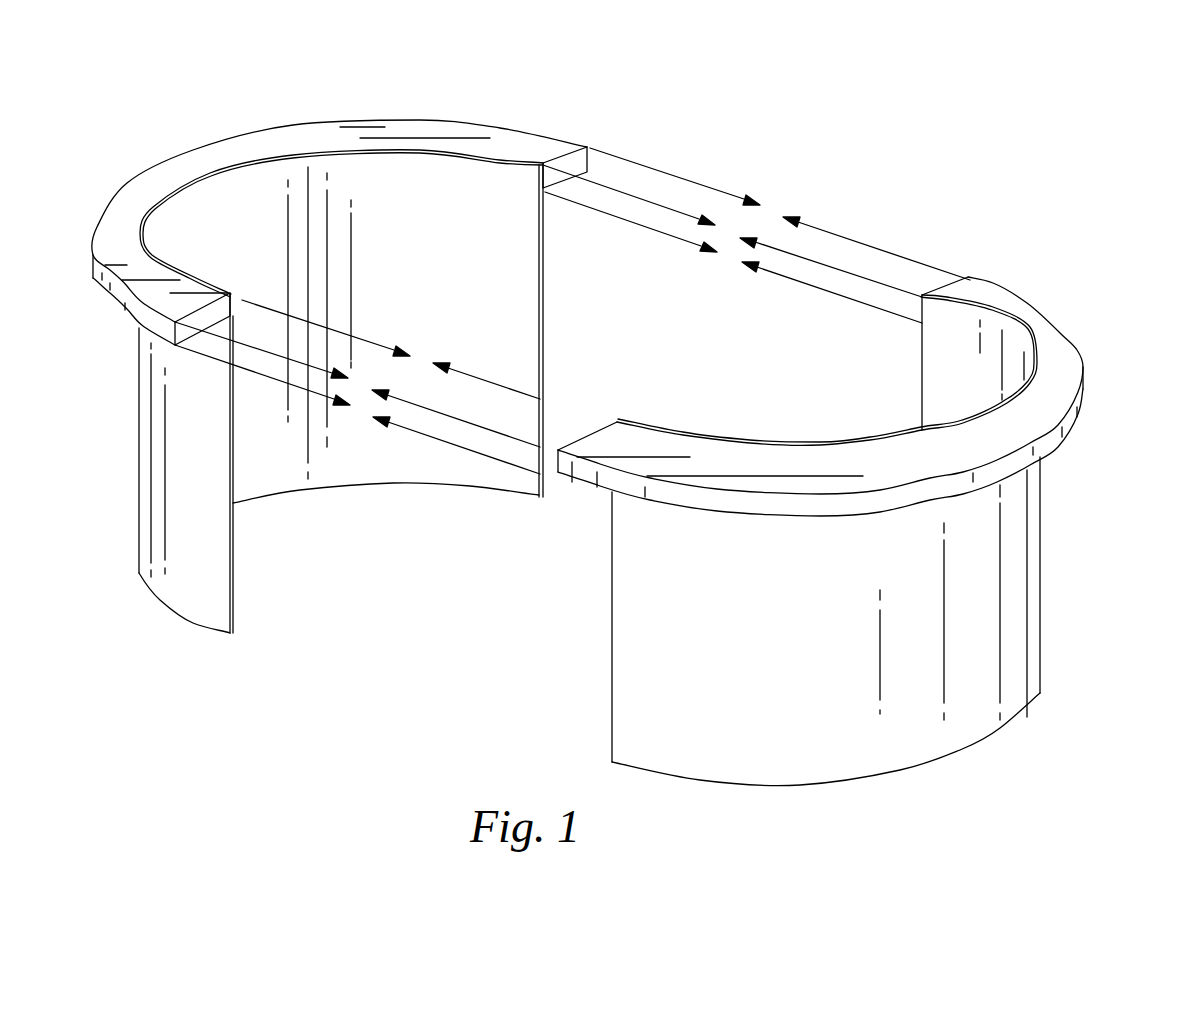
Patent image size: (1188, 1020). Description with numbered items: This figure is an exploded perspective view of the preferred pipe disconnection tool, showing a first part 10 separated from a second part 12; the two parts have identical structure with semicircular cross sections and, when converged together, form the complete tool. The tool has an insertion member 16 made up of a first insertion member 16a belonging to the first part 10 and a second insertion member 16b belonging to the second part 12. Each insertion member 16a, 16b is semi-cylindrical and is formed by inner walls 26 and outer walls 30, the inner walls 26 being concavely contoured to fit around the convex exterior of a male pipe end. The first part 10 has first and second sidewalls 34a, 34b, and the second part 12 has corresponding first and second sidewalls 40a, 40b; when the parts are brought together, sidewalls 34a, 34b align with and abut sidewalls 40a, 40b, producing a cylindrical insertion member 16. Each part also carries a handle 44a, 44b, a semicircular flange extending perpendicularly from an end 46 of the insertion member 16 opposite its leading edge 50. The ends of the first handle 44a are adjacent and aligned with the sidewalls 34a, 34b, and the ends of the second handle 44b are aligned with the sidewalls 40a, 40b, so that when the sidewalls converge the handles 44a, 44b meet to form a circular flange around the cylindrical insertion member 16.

The first part 10 is at (135, 118).
The second part 12 is at (1064, 261).
The insertion member 16 is at (1069, 662).
The first insertion member 16a is at (143, 483).
The second insertion member 16b is at (1027, 603).
The inner walls 26 is at (405, 283).
The outer walls 30 is at (207, 466).
The first sidewall 34a is at (233, 550).
The second sidewall 34b is at (543, 278).
The first sidewall 40a is at (610, 622).
The second sidewall 40b is at (920, 387).
The first handle 44a is at (287, 138).
The second handle 44b is at (1062, 340).
The end 46 is at (193, 183).
The leading edge 50 is at (900, 767).